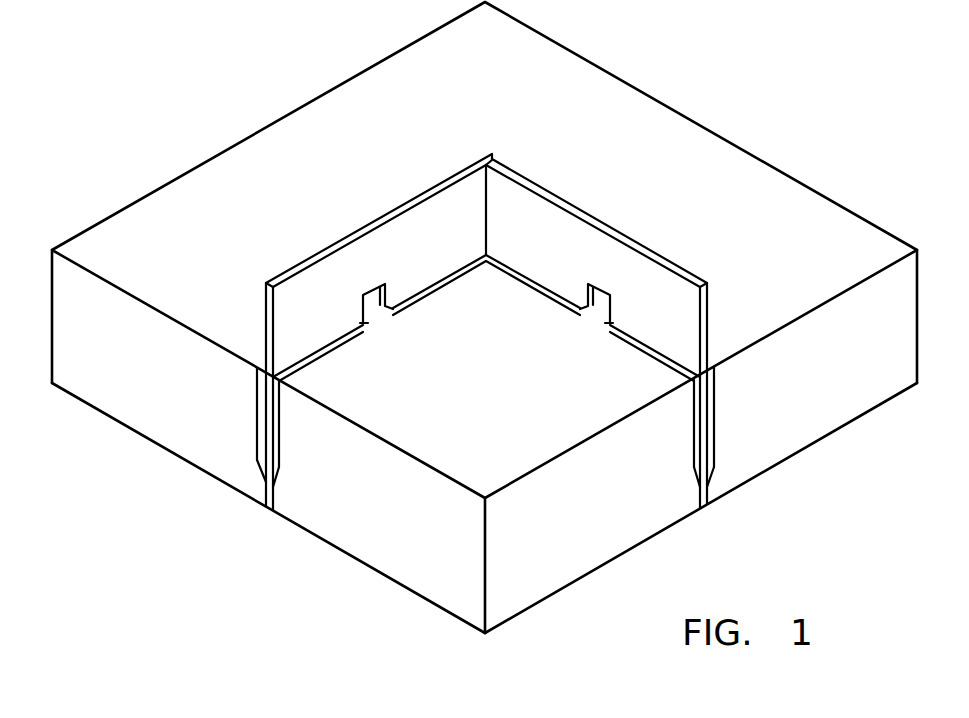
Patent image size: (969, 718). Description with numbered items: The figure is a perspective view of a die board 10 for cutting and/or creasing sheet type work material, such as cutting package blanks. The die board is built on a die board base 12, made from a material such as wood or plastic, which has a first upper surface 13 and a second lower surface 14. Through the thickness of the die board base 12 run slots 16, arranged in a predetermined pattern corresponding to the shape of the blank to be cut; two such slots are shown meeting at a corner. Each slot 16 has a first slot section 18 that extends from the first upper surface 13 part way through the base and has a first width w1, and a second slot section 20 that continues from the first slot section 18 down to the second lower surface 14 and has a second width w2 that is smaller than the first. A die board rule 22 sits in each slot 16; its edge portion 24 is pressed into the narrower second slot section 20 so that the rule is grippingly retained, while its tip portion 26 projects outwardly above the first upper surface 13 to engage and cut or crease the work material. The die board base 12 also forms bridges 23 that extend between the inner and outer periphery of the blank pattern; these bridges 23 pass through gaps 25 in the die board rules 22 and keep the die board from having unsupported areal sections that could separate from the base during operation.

The die board 10 is at (484, 319).
The die board base 12 is at (372, 108).
The first upper surface 13 is at (558, 142).
The second lower surface 14 is at (583, 583).
The slots 16 is at (492, 412).
The first slot section 18 is at (278, 420).
The second slot section 20 is at (263, 488).
The die board rule 22 is at (486, 317).
The bridges 23 is at (486, 285).
The edge portion 24 is at (278, 467).
The gaps 25 is at (388, 300).
The tip portion 26 is at (312, 255).
The first slot width w1 is at (717, 386).
The second slot width w2 is at (712, 487).